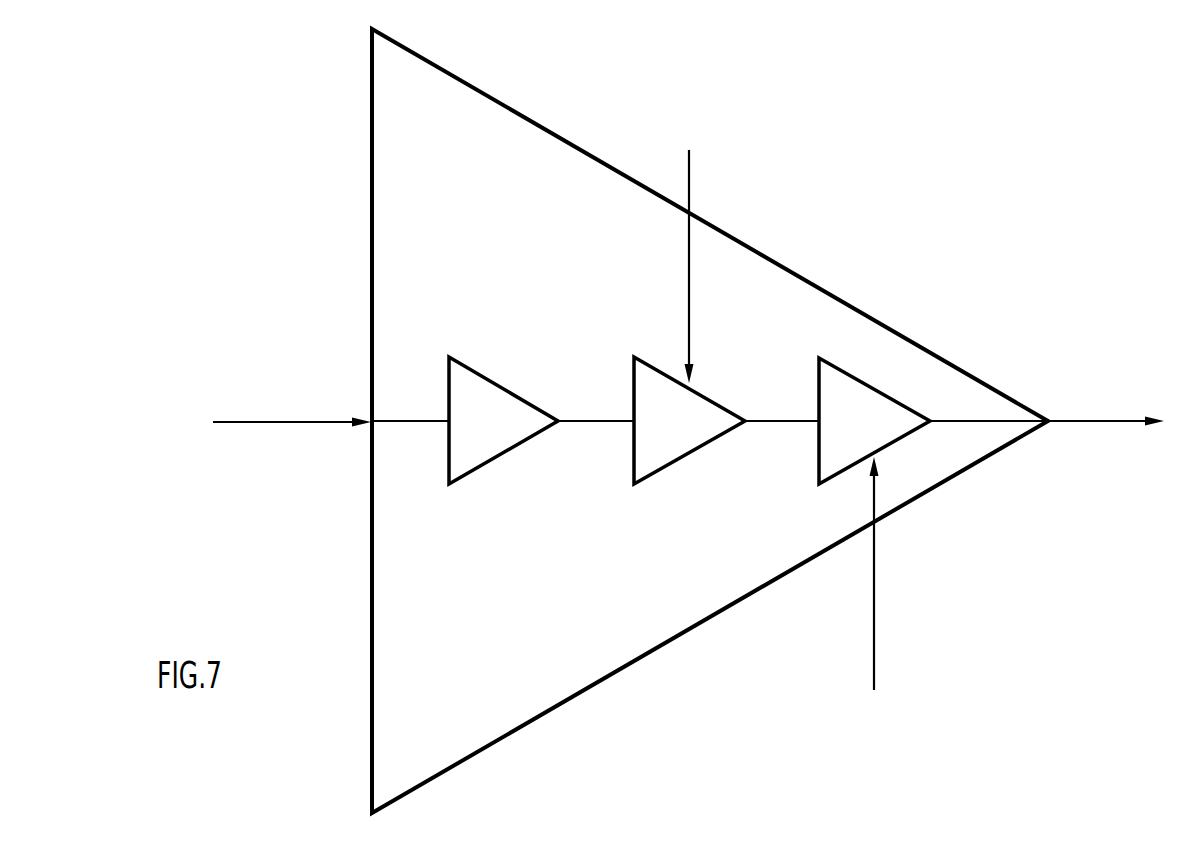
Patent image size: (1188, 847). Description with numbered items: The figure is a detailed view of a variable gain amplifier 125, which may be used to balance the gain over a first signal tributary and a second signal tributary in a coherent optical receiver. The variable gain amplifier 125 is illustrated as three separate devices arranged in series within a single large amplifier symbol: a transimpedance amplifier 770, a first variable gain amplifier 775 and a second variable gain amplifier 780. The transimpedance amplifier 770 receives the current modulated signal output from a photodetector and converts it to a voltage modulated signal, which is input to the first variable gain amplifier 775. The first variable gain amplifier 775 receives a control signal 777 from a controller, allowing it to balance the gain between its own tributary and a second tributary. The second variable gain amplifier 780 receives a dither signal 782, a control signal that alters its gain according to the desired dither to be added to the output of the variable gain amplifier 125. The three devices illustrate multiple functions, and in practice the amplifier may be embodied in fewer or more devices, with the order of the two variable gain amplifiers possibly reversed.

The variable gain amplifier 125 is at (913, 338).
The transimpedance amplifier 770 is at (488, 378).
The first variable gain amplifier 775 is at (670, 462).
The control signal 777 is at (687, 323).
The second variable gain amplifier 780 is at (818, 389).
The dither signal 782 is at (875, 667).